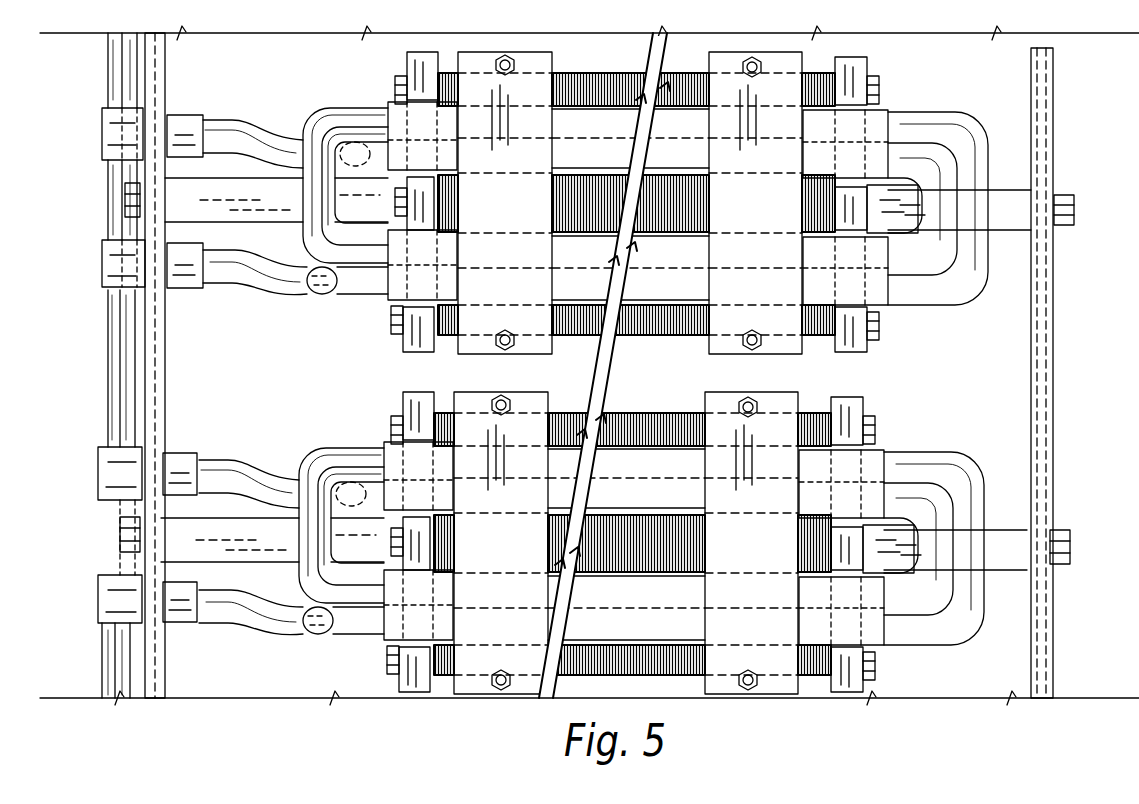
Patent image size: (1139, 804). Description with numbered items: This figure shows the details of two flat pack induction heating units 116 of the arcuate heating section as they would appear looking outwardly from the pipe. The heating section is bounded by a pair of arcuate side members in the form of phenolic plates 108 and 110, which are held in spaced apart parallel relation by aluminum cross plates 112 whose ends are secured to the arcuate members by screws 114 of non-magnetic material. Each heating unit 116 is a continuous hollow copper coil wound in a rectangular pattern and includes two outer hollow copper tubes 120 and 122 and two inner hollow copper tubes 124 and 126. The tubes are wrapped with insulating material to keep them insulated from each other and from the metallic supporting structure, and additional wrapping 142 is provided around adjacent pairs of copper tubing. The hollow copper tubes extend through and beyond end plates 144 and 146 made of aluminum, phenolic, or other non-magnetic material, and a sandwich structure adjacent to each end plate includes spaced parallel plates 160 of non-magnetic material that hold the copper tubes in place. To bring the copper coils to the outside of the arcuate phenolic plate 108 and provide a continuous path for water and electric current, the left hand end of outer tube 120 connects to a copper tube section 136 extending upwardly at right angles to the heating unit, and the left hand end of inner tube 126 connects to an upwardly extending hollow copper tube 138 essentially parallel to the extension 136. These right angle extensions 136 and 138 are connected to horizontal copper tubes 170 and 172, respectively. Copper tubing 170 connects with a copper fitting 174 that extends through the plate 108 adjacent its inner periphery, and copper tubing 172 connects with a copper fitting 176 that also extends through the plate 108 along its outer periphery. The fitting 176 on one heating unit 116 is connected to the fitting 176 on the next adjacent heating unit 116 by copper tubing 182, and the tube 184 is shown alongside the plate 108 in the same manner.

The phenolic plate 108 is at (160, 370).
The phenolic plate 110 is at (1042, 320).
The aluminum cross plate 112 is at (273, 205).
The screw 114 is at (125, 202).
The flat pack induction heating unit 116 is at (483, 44).
The outer hollow copper tube 120 is at (935, 295).
The outer hollow copper tube 122 is at (917, 117).
The inner hollow copper tube 124 is at (368, 253).
The inner hollow copper tube 126 is at (923, 156).
The copper tube section 136 is at (307, 290).
The upwardly extending hollow copper tube 138 is at (335, 132).
The additional wrapping 142 is at (388, 104).
The end plate 144 is at (423, 62).
The end plate 146 is at (853, 66).
The plate 160 is at (535, 62).
The horizontal copper tube 170 is at (227, 268).
The horizontal copper tube 172 is at (233, 135).
The copper fitting 174 is at (173, 288).
The copper fitting 176 is at (180, 118).
The copper tubing 182 is at (117, 325).
The tube 184 is at (117, 78).